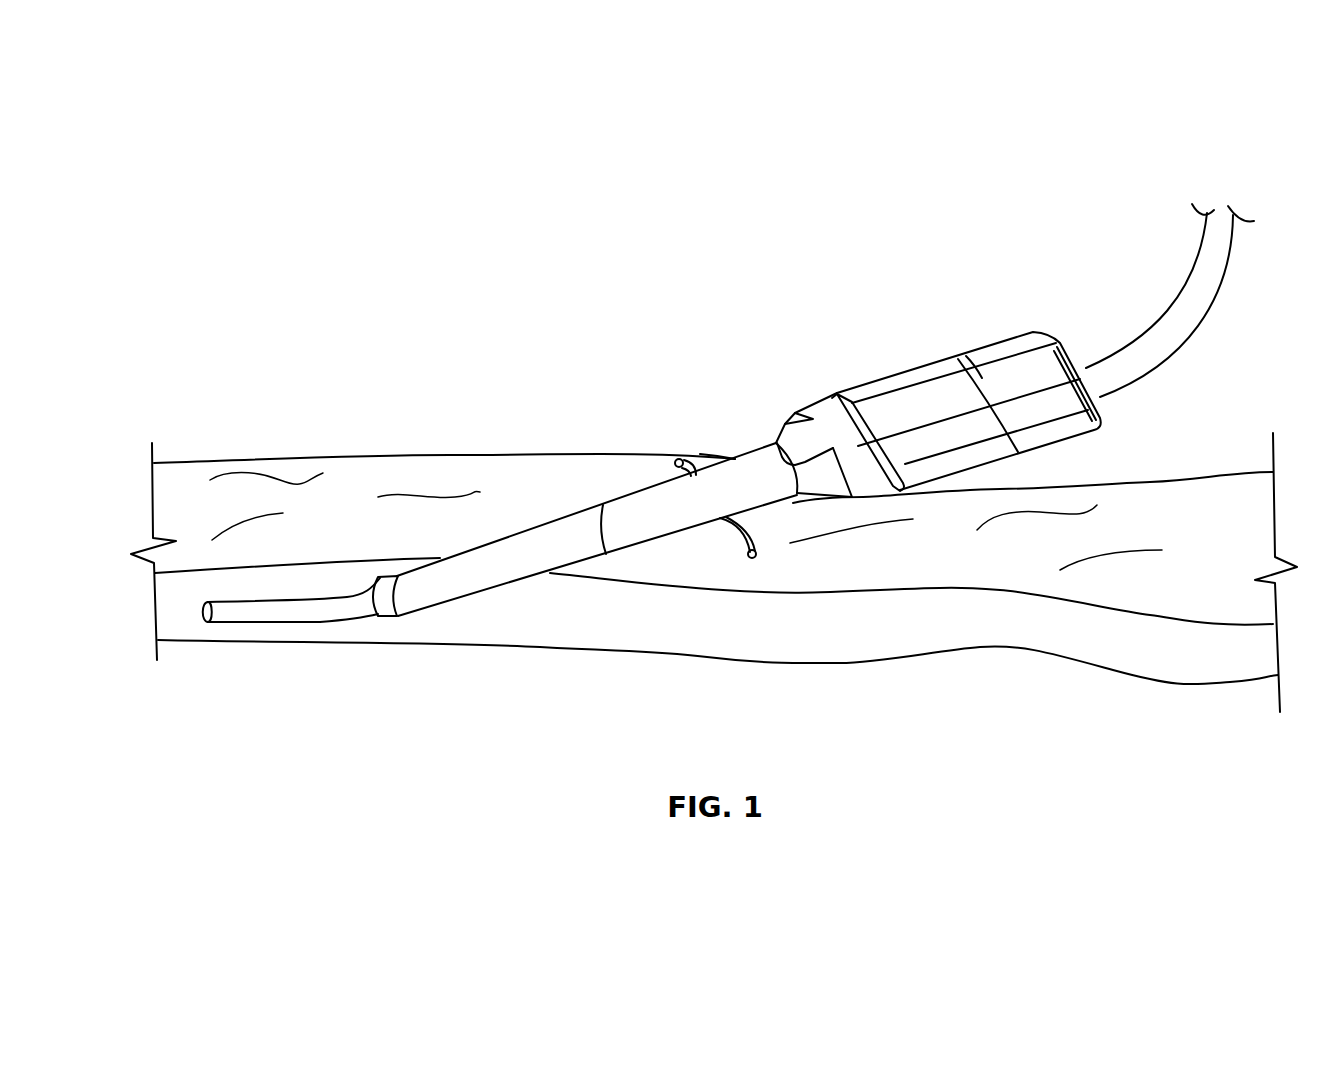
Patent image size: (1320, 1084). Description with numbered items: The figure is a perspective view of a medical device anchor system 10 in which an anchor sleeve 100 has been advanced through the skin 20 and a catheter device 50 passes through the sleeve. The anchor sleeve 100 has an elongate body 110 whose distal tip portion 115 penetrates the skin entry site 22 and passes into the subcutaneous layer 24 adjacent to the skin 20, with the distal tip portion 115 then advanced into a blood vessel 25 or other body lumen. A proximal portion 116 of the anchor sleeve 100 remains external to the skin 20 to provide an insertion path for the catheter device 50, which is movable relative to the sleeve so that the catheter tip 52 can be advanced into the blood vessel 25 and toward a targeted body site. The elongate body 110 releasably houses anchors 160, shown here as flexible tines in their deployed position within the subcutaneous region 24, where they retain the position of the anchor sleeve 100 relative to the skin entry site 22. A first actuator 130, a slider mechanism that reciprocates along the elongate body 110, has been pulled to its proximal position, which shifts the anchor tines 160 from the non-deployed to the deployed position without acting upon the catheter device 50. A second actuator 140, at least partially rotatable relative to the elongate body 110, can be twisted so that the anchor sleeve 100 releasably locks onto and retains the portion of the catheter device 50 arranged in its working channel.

The medical device anchor system 10 is at (808, 270).
The skin 20 is at (447, 455).
The skin entry site 22 is at (740, 443).
The subcutaneous layer 24 is at (305, 522).
The blood vessel 25 is at (612, 632).
The catheter device 50 is at (301, 632).
The catheter tip 52 is at (225, 617).
The anchor sleeve 100 is at (781, 400).
The elongate body 110 is at (617, 513).
The distal tip portion 115 is at (413, 595).
The proximal portion 116 is at (1076, 345).
The first actuator 130 is at (925, 393).
The second actuator 140 is at (1010, 365).
The anchors 160 is at (687, 458).